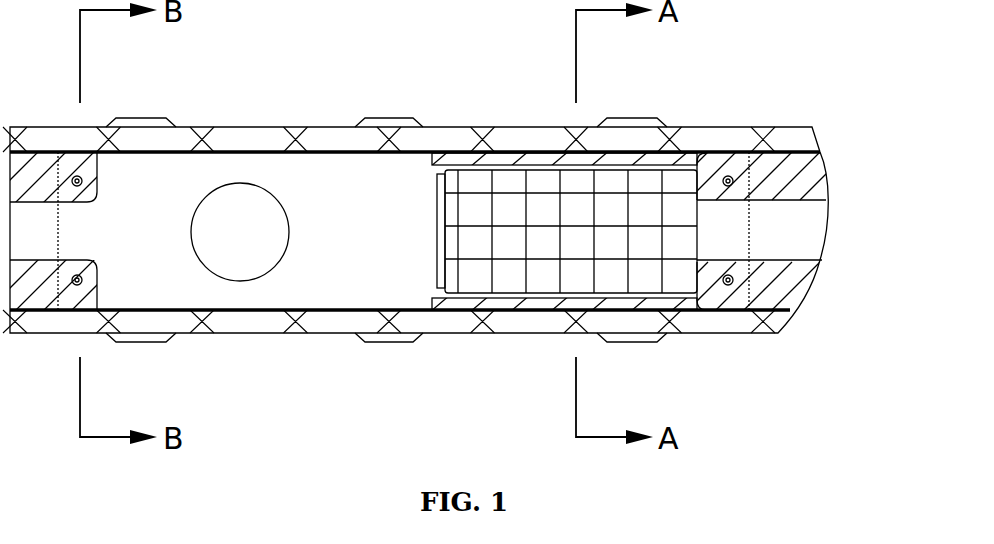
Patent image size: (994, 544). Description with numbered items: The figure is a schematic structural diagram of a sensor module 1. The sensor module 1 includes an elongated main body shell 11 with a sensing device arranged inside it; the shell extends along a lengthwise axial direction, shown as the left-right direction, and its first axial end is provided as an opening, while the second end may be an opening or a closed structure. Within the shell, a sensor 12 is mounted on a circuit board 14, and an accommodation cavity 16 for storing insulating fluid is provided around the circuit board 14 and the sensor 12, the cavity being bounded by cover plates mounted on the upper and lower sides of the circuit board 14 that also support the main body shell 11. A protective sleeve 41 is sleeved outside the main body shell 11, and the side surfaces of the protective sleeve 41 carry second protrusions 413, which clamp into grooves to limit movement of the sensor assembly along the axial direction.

The sensor module 1 is at (434, 243).
The main body shell 11 is at (510, 145).
The sensor 12 is at (645, 203).
The circuit board 14 is at (162, 180).
The accommodation cavity 16 is at (770, 225).
The protective sleeve 41 is at (263, 142).
The second protrusion 413 is at (385, 120).